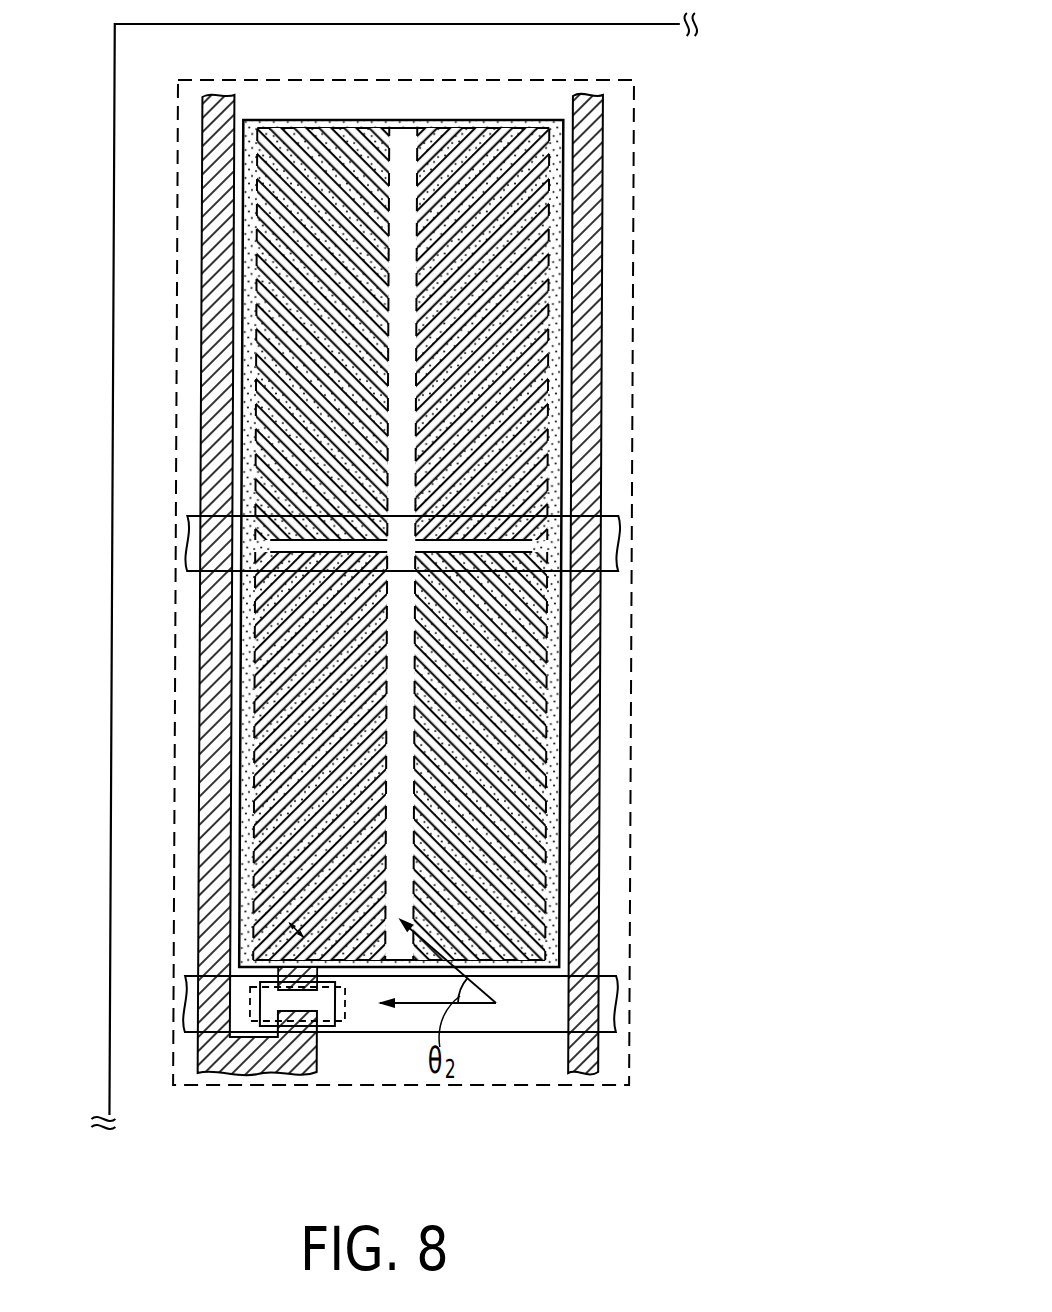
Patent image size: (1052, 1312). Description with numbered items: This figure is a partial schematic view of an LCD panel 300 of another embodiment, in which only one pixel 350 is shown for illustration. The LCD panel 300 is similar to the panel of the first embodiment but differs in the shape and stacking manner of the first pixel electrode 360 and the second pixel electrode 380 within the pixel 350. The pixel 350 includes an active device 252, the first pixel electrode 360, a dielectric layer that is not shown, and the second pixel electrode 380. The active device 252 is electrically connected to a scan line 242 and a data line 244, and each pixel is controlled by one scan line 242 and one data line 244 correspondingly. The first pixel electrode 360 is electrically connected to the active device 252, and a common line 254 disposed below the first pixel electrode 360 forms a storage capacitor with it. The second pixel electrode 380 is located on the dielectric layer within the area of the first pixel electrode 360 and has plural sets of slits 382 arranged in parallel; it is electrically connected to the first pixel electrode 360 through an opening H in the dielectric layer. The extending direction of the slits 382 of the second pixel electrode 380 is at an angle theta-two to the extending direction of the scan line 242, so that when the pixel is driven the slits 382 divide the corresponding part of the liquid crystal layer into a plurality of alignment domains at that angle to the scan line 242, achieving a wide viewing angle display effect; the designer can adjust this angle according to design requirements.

The LCD panel 300 is at (748, 1137).
The pixel 350 is at (635, 108).
The first pixel electrode 360 is at (560, 223).
The second pixel electrode 380 is at (550, 163).
The slits 382 is at (547, 312).
The data line 244 is at (203, 115).
The active device 252 is at (348, 1013).
The scan line 242 is at (608, 1012).
The common line 254 is at (603, 540).
The opening H is at (294, 926).